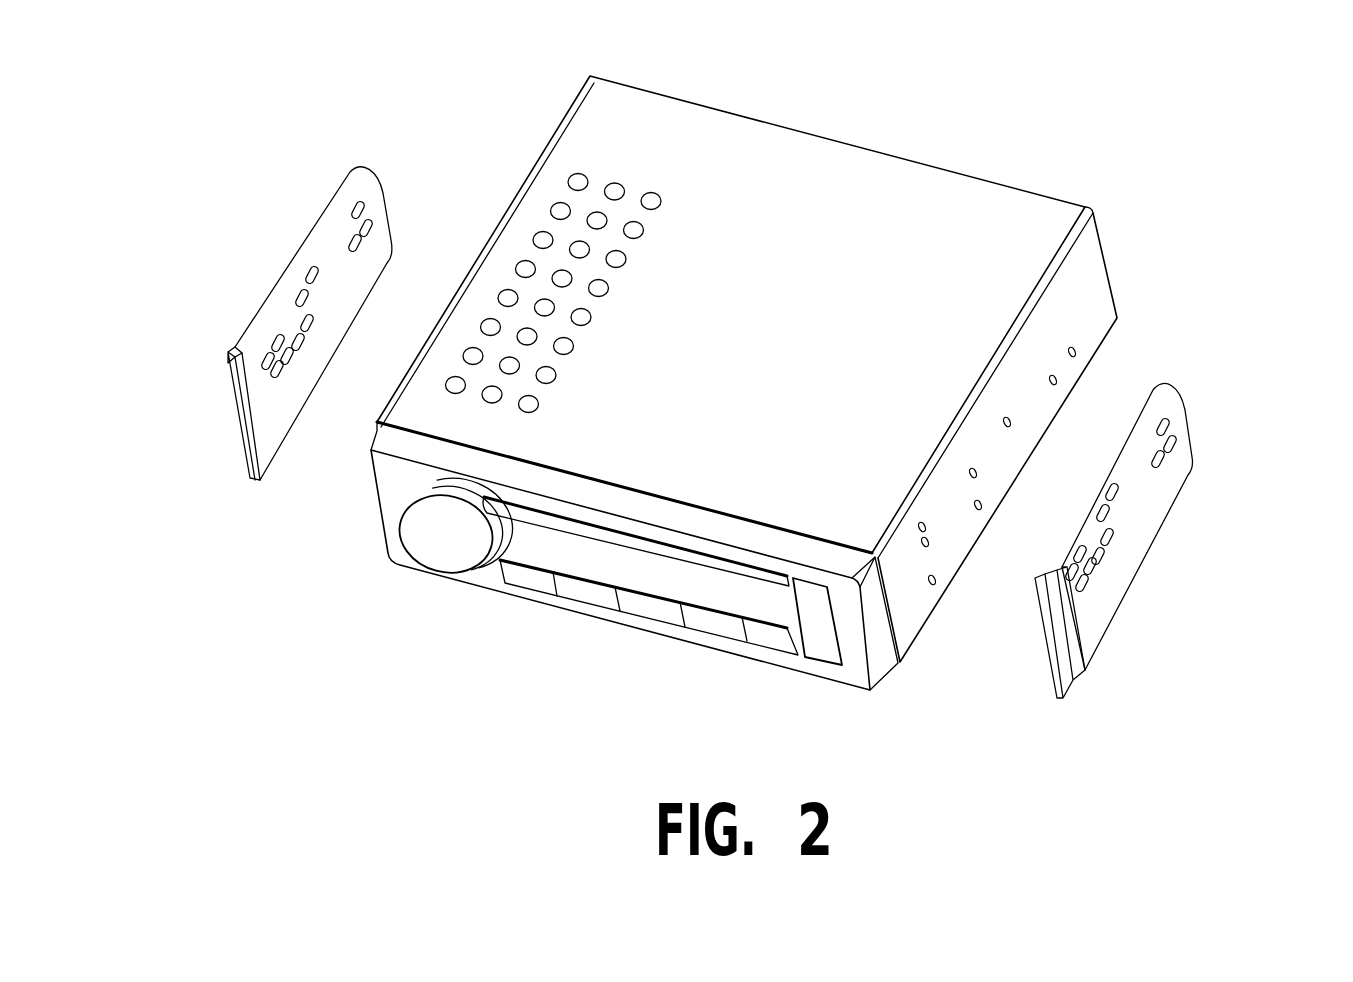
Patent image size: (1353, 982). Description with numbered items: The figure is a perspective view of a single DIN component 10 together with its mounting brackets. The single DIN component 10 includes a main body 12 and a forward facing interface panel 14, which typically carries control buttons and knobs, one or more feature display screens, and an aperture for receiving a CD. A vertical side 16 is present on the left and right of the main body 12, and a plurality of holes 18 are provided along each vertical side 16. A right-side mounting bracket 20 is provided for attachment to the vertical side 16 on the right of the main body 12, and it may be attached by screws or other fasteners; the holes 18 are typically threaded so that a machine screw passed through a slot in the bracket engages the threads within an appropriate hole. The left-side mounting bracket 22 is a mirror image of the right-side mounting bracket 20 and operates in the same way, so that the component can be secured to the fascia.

The single DIN component 10 is at (928, 130).
The main body 12 is at (1010, 218).
The forward facing interface panel 14 is at (400, 553).
The vertical side 16 is at (1090, 250).
The holes 18 is at (933, 585).
The right-side mounting bracket 20 is at (1170, 390).
The left-side mounting bracket 22 is at (315, 222).